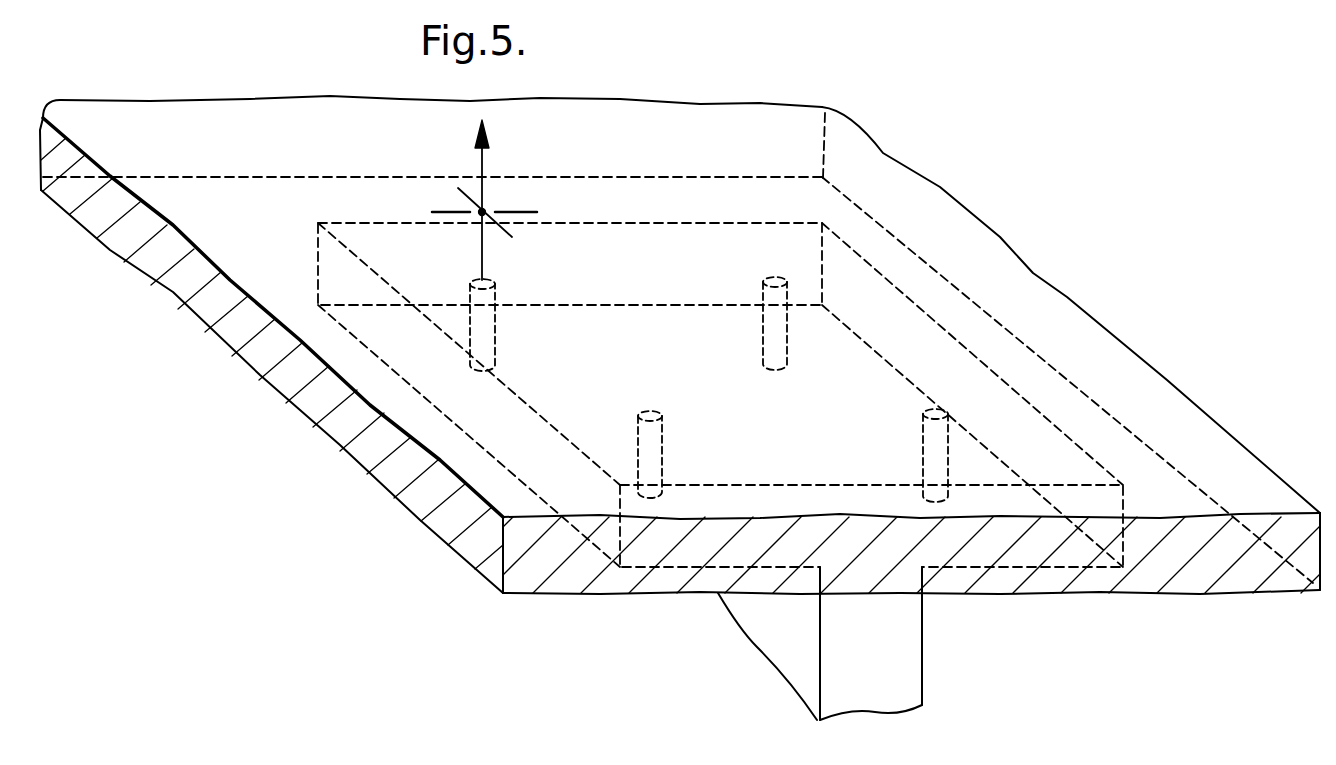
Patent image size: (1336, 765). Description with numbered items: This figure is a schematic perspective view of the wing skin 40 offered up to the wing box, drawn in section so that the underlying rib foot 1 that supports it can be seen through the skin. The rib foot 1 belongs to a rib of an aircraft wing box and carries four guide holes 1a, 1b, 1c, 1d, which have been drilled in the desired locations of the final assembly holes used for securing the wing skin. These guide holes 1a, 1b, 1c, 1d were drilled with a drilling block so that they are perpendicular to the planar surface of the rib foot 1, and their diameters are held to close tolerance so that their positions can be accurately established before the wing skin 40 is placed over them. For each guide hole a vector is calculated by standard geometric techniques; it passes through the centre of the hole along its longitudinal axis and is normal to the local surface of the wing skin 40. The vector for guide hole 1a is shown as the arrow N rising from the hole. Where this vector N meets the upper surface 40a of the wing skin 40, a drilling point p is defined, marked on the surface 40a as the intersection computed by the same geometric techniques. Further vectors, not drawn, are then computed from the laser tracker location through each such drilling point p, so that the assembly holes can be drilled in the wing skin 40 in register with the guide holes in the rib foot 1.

The rib foot 1 is at (993, 537).
The guide hole 1a is at (470, 283).
The guide hole 1b is at (763, 283).
The guide hole 1c is at (638, 412).
The guide hole 1d is at (924, 412).
The wing skin 40 is at (1217, 558).
The upper surface of wing skin 40a is at (1058, 311).
The vector N is at (470, 199).
The drilling point p is at (480, 211).